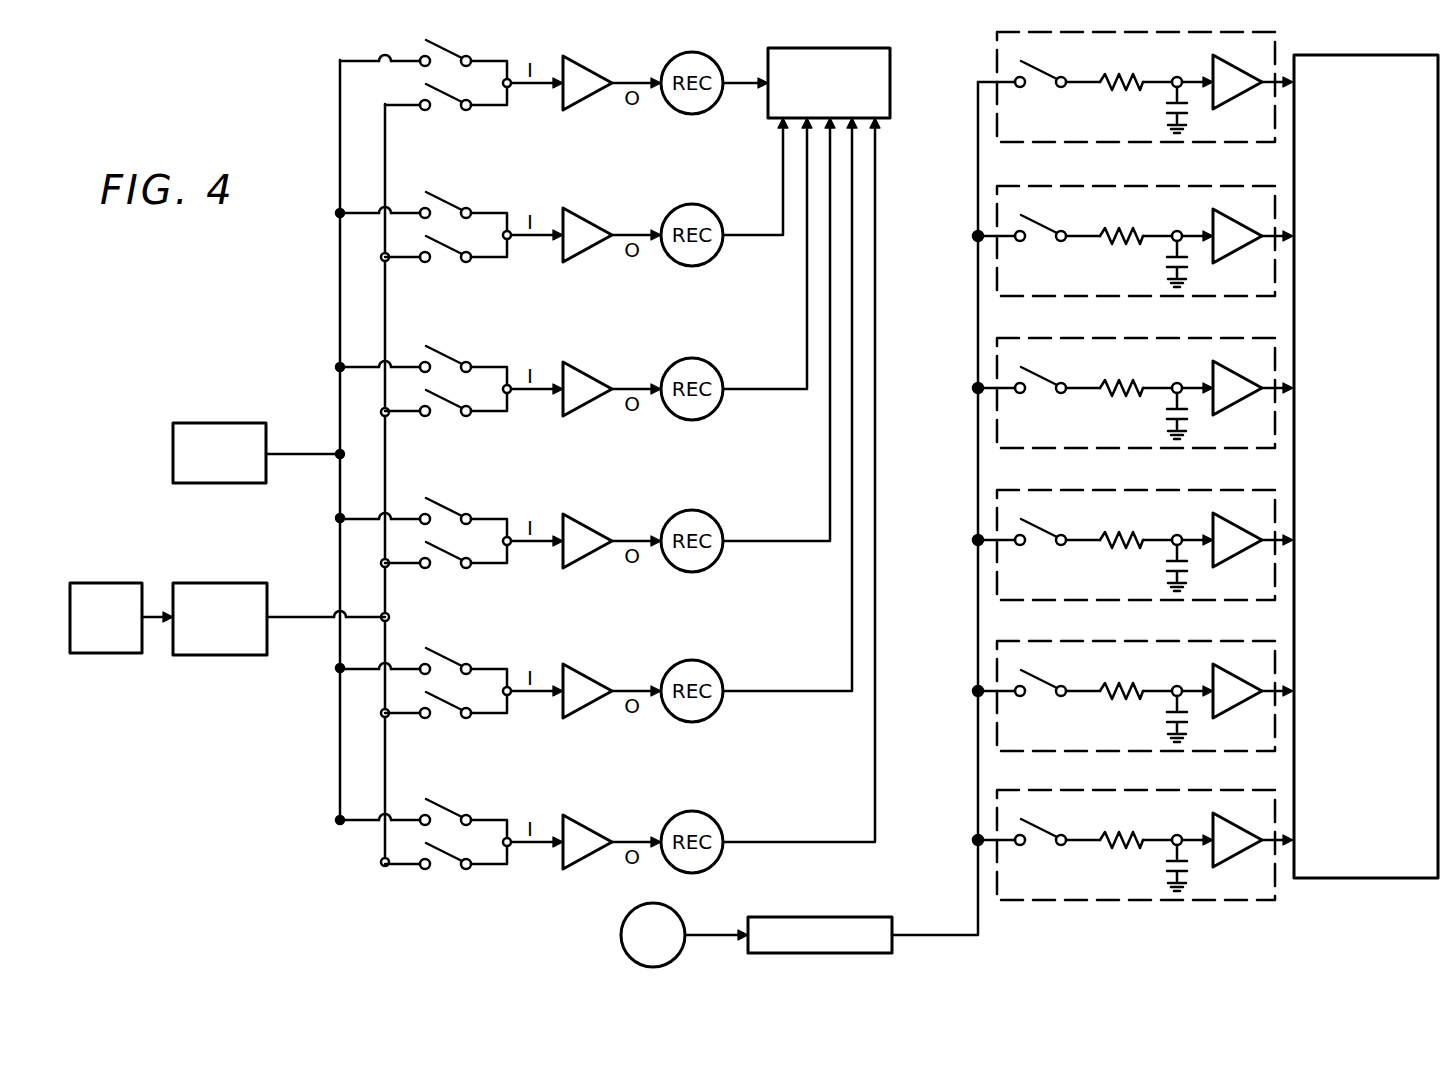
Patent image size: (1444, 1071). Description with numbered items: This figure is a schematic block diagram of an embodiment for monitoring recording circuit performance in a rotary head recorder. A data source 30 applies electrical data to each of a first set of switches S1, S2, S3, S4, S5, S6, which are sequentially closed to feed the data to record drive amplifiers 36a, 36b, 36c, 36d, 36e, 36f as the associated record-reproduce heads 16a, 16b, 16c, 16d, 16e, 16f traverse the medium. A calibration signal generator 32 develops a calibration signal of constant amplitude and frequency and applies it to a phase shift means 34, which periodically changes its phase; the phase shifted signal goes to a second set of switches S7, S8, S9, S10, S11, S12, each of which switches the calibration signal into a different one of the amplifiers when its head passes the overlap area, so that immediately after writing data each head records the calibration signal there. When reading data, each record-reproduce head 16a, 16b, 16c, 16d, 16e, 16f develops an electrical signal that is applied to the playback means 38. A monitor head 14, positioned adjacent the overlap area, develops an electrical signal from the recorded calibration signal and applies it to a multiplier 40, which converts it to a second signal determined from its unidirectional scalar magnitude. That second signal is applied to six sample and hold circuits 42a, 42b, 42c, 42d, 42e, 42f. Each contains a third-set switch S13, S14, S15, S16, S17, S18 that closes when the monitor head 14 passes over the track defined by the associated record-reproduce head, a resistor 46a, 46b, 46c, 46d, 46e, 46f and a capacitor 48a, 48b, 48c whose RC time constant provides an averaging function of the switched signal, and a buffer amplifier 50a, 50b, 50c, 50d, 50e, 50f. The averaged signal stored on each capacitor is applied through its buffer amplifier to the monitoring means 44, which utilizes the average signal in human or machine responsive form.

The monitor head 14 is at (622, 924).
The record-reproduce head 16a is at (714, 72).
The record-reproduce head 16b is at (724, 192).
The record-reproduce head 16c is at (736, 269).
The record-reproduce head 16d is at (748, 345).
The record-reproduce head 16e is at (759, 420).
The record-reproduce head 16f is at (770, 495).
The data source 30 is at (240, 422).
The calibration signal generator 32 is at (130, 583).
The phase shift means 34 is at (197, 583).
The record drive amplifier 36a is at (587, 71).
The record drive amplifier 36b is at (596, 223).
The record drive amplifier 36c is at (595, 377).
The record drive amplifier 36d is at (596, 529).
The record drive amplifier 36e is at (596, 679).
The record drive amplifier 36f is at (594, 830).
The playback means 38 is at (841, 48).
The multiplier 40 is at (842, 917).
The sample and hold circuit 42a is at (1135, 100).
The sample and hold circuit 42b is at (1135, 254).
The sample and hold circuit 42c is at (1135, 406).
The sample and hold circuit 42d is at (1135, 558).
The sample and hold circuit 42e is at (1135, 709).
The sample and hold circuit 42f is at (1135, 858).
The monitoring means 44 is at (1377, 163).
The resistor 46a is at (1122, 67).
The resistor 46b is at (1122, 221).
The resistor 46c is at (1121, 373).
The resistor 46d is at (1143, 547).
The resistor 46e is at (1143, 698).
The resistor 46f is at (1143, 847).
The capacitor 48a is at (1148, 110).
The capacitor 48b is at (1148, 264).
The capacitor 48c is at (1148, 416).
The buffer amplifier 50a is at (1238, 72).
The buffer amplifier 50b is at (1238, 226).
The buffer amplifier 50c is at (1237, 378).
The buffer amplifier 50d is at (1238, 530).
The buffer amplifier 50e is at (1238, 681).
The buffer amplifier 50f is at (1237, 830).
The switch S1 is at (448, 45).
The switch S2 is at (448, 197).
The switch S3 is at (448, 351).
The switch S4 is at (448, 503).
The switch S5 is at (448, 653).
The switch S6 is at (448, 804).
The switch S7 is at (448, 115).
The switch S8 is at (448, 267).
The switch S9 is at (448, 421).
The switch S10 is at (455, 573).
The switch S11 is at (455, 723).
The switch S12 is at (455, 874).
The switch S13 is at (1045, 89).
The switch S14 is at (1045, 243).
The switch S15 is at (1045, 395).
The switch S16 is at (1045, 547).
The switch S17 is at (1045, 698).
The switch S18 is at (1045, 847).